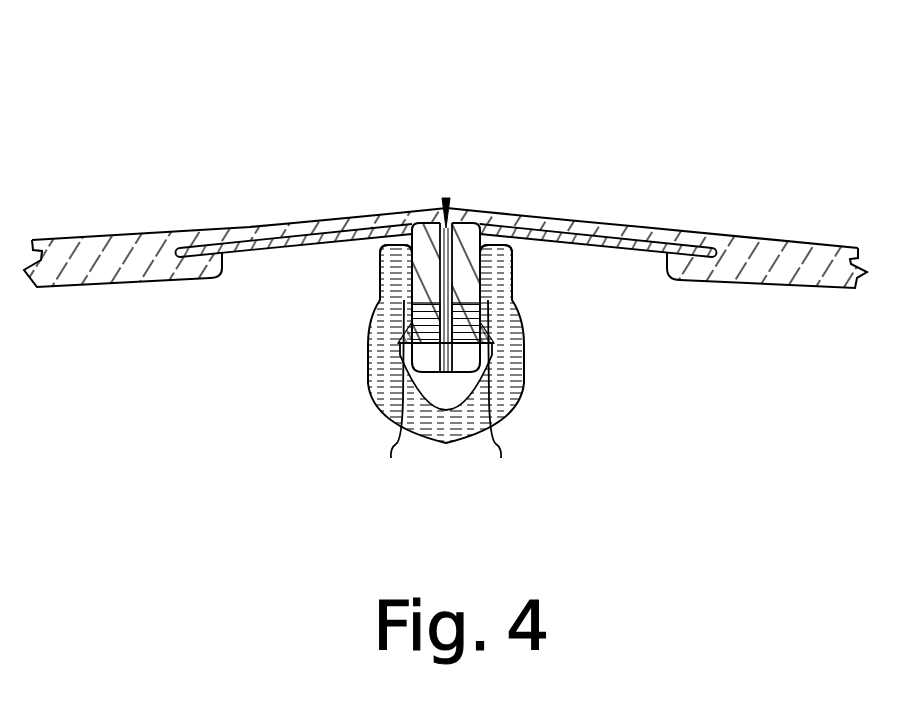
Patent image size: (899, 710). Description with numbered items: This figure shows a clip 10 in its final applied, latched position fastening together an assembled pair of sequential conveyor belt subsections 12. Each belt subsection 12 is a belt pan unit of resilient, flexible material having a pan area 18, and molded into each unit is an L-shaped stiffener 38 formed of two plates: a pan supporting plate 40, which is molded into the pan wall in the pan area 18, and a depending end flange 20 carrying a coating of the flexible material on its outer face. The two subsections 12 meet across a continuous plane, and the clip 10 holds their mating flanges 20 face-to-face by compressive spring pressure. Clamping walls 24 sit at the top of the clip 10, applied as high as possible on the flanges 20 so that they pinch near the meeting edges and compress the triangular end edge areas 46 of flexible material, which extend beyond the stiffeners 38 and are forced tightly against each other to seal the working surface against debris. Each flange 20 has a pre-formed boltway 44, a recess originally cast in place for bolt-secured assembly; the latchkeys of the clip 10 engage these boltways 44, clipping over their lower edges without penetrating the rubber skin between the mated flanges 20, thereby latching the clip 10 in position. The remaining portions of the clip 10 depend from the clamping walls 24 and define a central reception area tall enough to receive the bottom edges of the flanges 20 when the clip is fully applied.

The clip 10 is at (516, 408).
The belt subsection 12 is at (113, 107).
The pan area 18 is at (135, 237).
The flange 20 is at (391, 458).
The clamping wall 24 is at (381, 259).
The stiffener 38 is at (421, 234).
The pan supporting plate 40 is at (237, 247).
The boltway 44 is at (371, 310).
The end edge area 46 is at (446, 200).